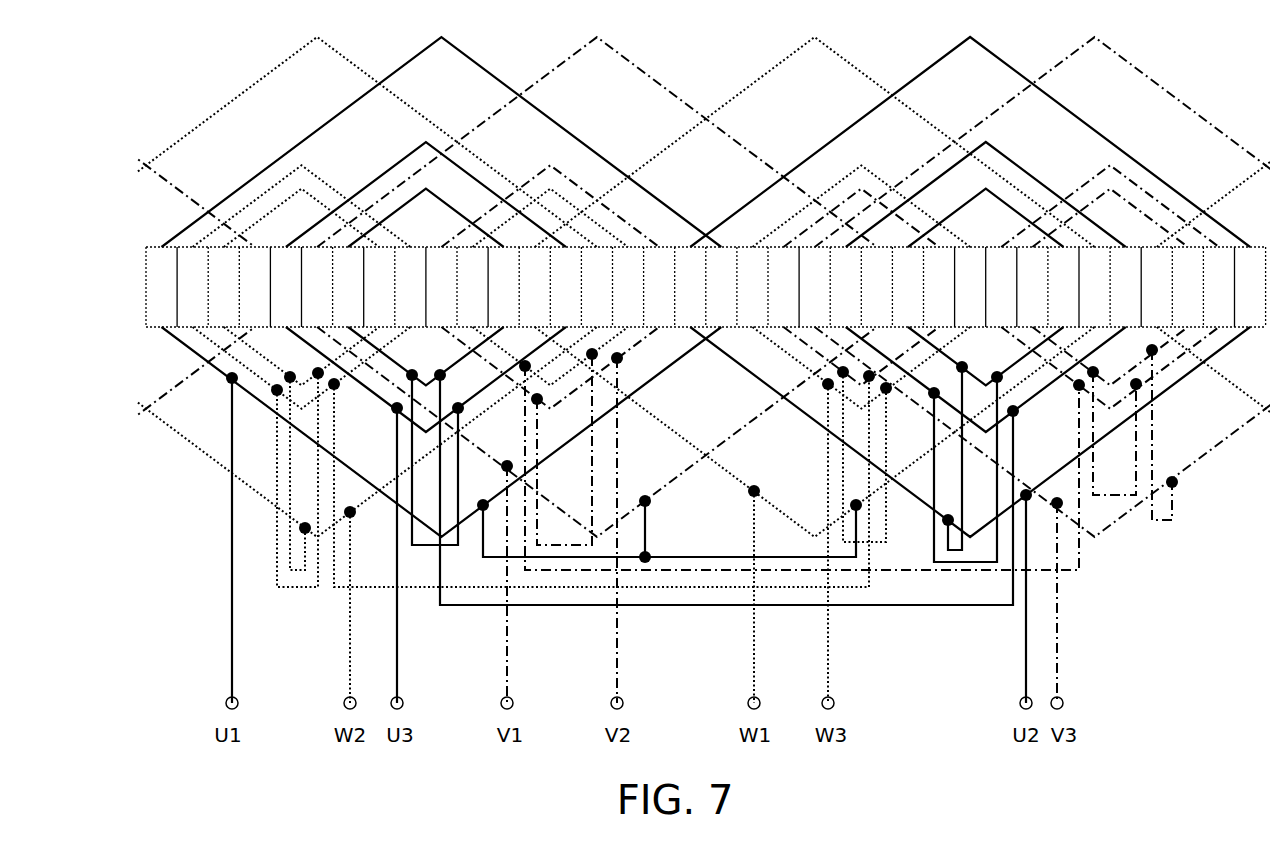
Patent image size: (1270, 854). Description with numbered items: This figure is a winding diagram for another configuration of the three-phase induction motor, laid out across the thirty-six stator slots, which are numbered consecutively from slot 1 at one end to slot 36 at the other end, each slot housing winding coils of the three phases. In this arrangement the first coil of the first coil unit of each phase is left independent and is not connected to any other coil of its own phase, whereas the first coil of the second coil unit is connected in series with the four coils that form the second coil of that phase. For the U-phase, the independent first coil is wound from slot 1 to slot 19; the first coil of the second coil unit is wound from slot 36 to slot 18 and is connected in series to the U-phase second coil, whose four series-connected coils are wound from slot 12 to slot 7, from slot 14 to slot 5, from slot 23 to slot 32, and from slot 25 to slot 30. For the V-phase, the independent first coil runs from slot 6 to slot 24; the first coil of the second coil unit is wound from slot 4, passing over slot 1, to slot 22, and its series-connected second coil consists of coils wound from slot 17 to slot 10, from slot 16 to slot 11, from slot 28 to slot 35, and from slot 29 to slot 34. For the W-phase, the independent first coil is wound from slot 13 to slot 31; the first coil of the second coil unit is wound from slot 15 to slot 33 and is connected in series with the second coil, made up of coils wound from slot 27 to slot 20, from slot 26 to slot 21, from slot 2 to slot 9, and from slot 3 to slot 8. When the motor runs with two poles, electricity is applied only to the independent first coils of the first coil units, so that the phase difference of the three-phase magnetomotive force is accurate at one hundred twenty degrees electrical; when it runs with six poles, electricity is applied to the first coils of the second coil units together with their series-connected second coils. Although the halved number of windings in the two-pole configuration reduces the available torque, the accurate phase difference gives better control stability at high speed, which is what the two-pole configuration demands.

The first slot 1 is at (156, 287).
The second slot 2 is at (187, 287).
The third slot 3 is at (218, 287).
The fourth slot 4 is at (249, 287).
The fifth slot 5 is at (280, 287).
The sixth slot 6 is at (312, 287).
The seventh slot 7 is at (343, 287).
The eighth slot 8 is at (374, 287).
The ninth slot 9 is at (405, 287).
The tenth slot 10 is at (439, 287).
The eleventh slot 11 is at (470, 287).
The twelfth slot 12 is at (501, 287).
The thirteenth slot 13 is at (532, 287).
The fourteenth slot 14 is at (563, 287).
The fifteenth slot 15 is at (594, 287).
The sixteenth slot 16 is at (626, 287).
The seventeenth slot 17 is at (657, 287).
The eighteenth slot 18 is at (688, 287).
The nineteenth slot 19 is at (719, 287).
The twentieth slot 20 is at (750, 287).
The twenty-first slot 21 is at (781, 287).
The twenty-second slot 22 is at (812, 287).
The twenty-third slot 23 is at (843, 287).
The twenty-fourth slot 24 is at (874, 287).
The twenty-fifth slot 25 is at (905, 287).
The twenty-sixth slot 26 is at (937, 287).
The twenty-seventh slot 27 is at (968, 287).
The twenty-eighth slot 28 is at (999, 287).
The twenty-ninth slot 29 is at (1030, 287).
The thirtieth slot 30 is at (1061, 287).
The thirty-first slot 31 is at (1092, 287).
The thirty-second slot 32 is at (1123, 287).
The thirty-third slot 33 is at (1154, 287).
The thirty-fourth slot 34 is at (1185, 287).
The thirty-fifth slot 35 is at (1216, 287).
The thirty-sixth slot 36 is at (1250, 287).